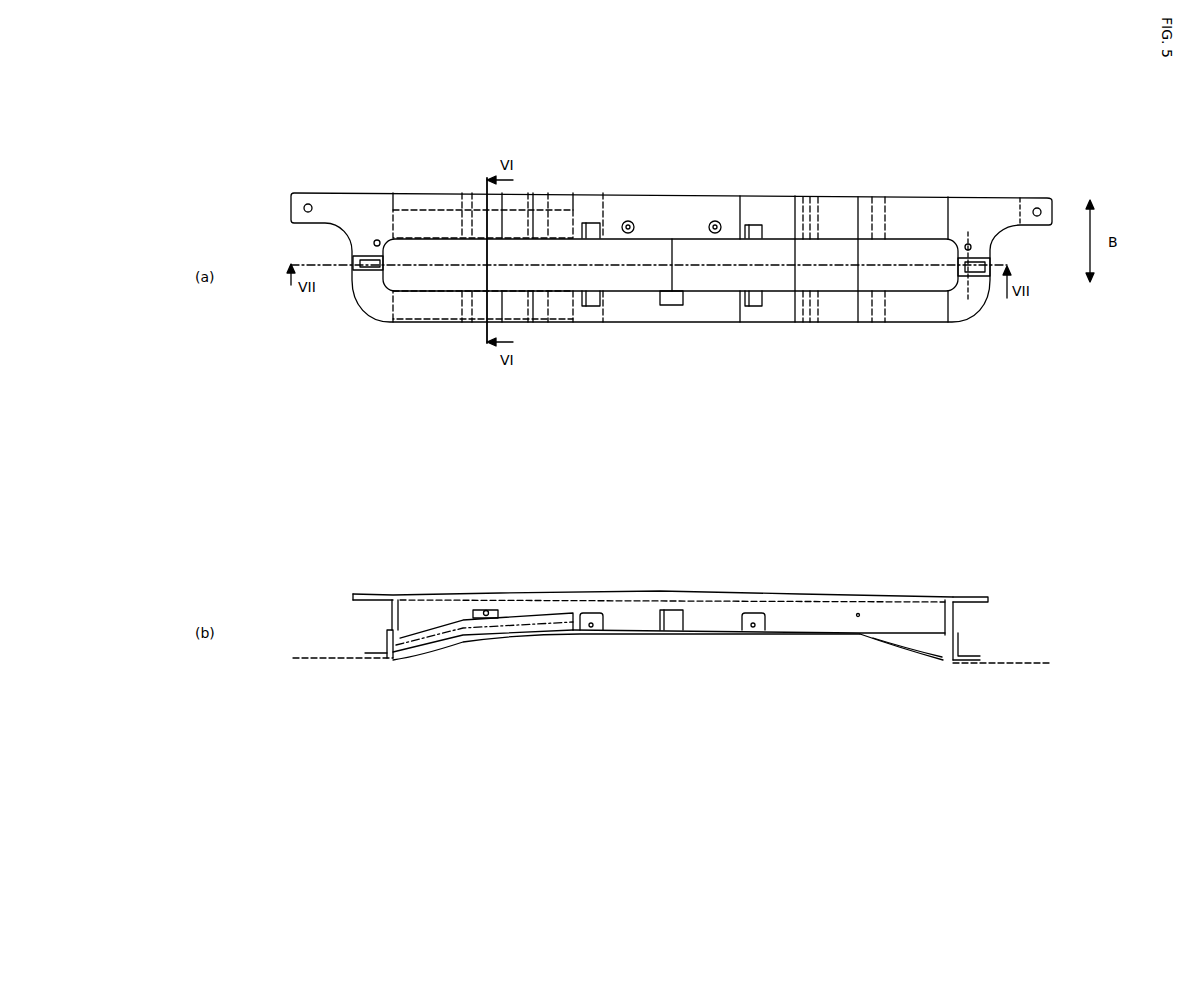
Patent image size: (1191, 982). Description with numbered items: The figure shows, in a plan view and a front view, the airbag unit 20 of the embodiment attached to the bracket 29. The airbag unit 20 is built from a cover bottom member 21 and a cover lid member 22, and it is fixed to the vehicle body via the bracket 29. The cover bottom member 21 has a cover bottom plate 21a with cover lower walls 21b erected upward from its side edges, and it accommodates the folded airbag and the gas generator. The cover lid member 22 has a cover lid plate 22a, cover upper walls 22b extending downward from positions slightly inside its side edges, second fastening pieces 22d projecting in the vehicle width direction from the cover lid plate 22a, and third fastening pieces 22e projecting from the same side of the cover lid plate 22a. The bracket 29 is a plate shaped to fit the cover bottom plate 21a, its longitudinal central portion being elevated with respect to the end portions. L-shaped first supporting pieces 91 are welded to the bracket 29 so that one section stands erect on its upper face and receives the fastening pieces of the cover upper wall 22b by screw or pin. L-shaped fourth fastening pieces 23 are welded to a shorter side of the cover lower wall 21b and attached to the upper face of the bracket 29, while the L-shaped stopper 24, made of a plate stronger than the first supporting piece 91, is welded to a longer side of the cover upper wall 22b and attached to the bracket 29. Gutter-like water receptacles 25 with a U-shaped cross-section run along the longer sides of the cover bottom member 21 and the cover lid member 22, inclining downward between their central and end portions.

The airbag unit 20 is at (782, 226).
The cover bottom member 21 is at (869, 645).
The cover bottom plate 21a is at (892, 648).
The cover lower walls 21b is at (925, 657).
The cover lid member 22 is at (904, 235).
The cover lid plate 22a is at (688, 248).
The cover upper walls 22b is at (925, 615).
The second fastening pieces 22d is at (353, 259).
The third fastening pieces 22e is at (632, 222).
The fourth fastening pieces 23 is at (380, 656).
The stopper 24 is at (672, 306).
The water receptacles 25 is at (428, 218).
The bracket 29 is at (826, 210).
The first supporting pieces 91 is at (591, 224).